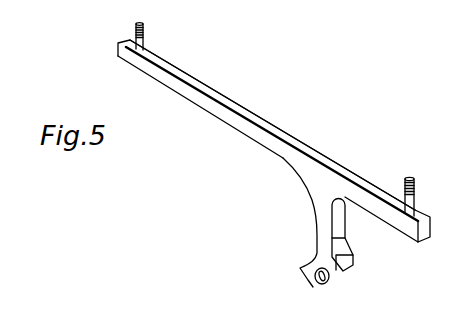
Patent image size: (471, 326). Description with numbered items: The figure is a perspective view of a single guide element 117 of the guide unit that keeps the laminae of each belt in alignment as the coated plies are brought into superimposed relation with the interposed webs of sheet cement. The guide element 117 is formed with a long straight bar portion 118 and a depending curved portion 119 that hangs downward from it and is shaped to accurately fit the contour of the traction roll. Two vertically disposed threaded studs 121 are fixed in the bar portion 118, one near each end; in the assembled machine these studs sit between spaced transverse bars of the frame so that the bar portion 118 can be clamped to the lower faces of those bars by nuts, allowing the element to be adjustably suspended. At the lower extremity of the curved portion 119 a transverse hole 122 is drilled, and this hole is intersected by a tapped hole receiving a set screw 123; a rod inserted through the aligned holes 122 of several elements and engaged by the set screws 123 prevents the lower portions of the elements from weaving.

The guide element 117 is at (224, 96).
The straight bar portion 118 is at (163, 61).
The depending curved portion 119 is at (316, 235).
The threaded stud 121 is at (155, 7).
The transverse hole 122 is at (346, 275).
The set screw 123 is at (313, 284).